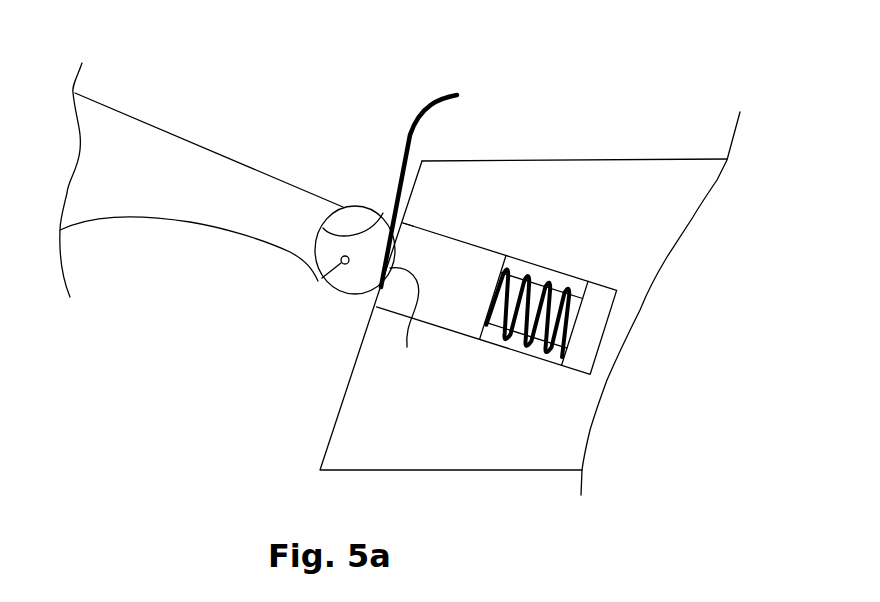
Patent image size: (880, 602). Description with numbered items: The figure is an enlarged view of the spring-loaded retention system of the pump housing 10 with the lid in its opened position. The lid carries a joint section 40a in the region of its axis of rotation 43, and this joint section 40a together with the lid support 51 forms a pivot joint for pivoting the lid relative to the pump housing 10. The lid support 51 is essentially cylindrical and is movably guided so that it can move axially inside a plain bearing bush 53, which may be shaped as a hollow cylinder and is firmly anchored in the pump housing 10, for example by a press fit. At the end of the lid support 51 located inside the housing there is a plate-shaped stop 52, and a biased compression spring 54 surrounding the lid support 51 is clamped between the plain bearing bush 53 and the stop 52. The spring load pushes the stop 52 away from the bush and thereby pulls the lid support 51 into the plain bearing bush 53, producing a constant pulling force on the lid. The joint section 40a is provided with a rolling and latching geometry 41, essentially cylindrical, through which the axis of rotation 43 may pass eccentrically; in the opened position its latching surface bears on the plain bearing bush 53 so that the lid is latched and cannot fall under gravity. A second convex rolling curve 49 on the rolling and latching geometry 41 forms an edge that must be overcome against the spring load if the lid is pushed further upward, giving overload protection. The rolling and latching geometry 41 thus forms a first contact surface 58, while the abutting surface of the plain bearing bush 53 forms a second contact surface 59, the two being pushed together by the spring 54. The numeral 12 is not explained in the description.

The pump housing 10 is at (602, 172).
The slot opening 12 is at (490, 340).
The joint section 40a is at (158, 148).
The rolling and latching geometry 41 is at (357, 290).
The axis of rotation 43 is at (318, 283).
The second convex rolling curve 49 is at (387, 212).
The lid support 51 is at (560, 292).
The stop 52 is at (598, 293).
The plain bearing bush 53 is at (467, 253).
The spring 54 is at (532, 273).
The first contact surface 58 is at (443, 185).
The second contact surface 59 is at (400, 324).